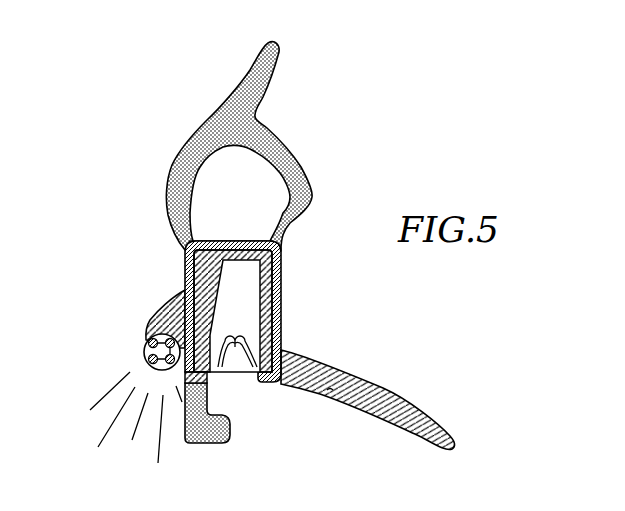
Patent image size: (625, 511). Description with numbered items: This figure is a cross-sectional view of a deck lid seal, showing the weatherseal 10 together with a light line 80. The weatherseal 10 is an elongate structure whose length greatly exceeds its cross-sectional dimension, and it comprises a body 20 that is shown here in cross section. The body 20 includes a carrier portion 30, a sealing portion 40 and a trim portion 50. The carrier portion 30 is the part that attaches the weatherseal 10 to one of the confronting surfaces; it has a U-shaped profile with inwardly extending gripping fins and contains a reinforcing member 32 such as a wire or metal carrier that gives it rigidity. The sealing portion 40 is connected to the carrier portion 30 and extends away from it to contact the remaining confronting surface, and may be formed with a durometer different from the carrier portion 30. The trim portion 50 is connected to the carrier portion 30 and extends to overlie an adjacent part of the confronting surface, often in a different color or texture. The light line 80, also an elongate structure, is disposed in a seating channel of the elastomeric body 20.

The weatherseal 10 is at (105, 213).
The body 20 is at (269, 312).
The carrier portion 30 is at (183, 283).
The reinforcing member 32 is at (283, 325).
The sealing portion 40 is at (265, 73).
The trim portion 50 is at (384, 390).
The light line 80 is at (142, 353).